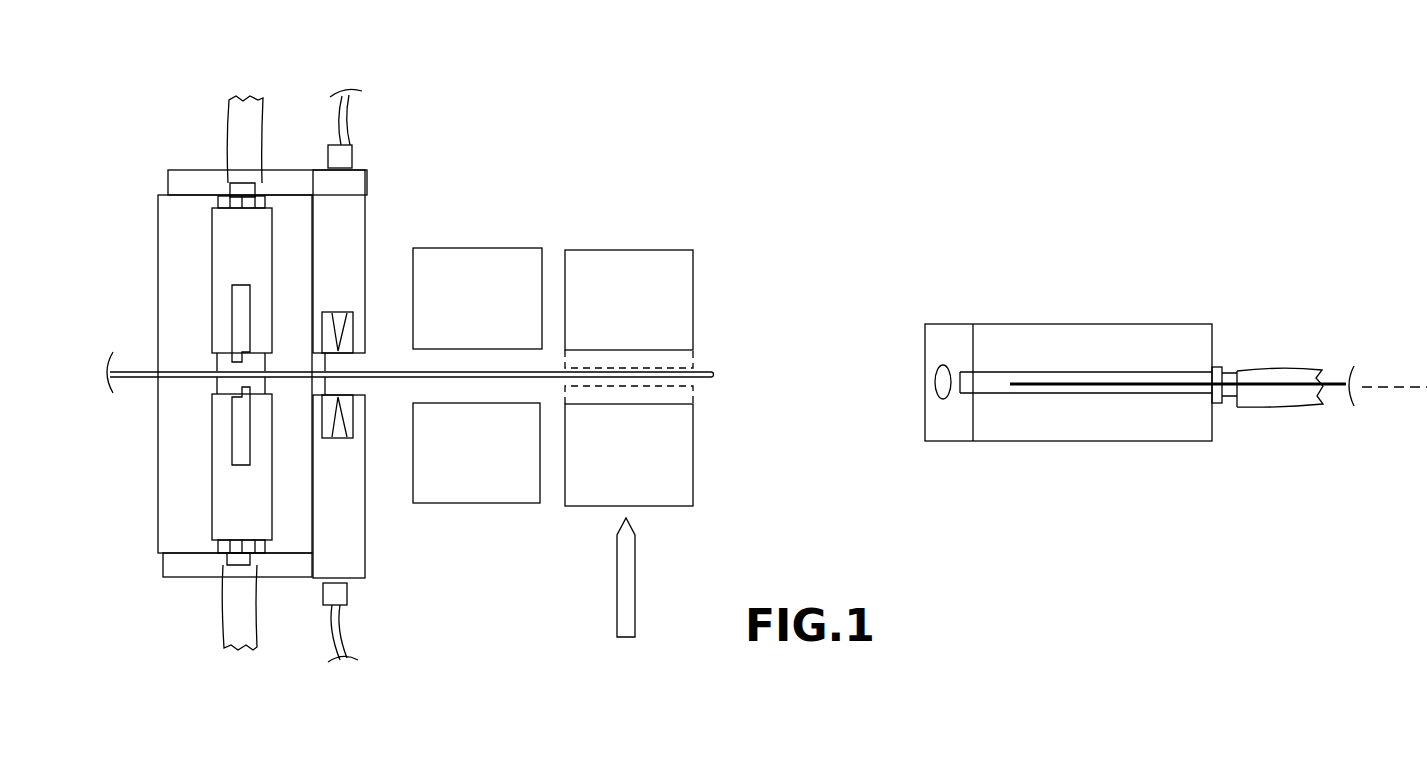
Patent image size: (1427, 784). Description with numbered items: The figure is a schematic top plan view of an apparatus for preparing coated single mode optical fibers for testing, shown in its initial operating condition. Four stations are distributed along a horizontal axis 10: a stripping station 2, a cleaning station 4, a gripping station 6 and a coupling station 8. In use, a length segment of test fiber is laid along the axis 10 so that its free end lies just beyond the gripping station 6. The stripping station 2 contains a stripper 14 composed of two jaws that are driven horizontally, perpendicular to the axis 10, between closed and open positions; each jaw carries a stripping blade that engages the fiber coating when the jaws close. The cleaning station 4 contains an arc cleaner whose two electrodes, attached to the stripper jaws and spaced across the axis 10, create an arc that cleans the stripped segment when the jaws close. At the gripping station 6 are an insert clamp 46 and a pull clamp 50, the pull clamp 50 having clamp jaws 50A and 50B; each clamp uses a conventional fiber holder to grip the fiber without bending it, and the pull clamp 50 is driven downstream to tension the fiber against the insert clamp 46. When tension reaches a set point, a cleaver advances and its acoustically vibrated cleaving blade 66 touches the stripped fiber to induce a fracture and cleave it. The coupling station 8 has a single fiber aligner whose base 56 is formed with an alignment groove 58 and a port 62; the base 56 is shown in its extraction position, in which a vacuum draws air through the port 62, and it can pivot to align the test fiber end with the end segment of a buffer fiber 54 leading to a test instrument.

The stripping station 2 is at (298, 108).
The cleaning station 4 is at (388, 190).
The gripping station 6 is at (558, 200).
The coupling station 8 is at (1076, 300).
The horizontal (Z) axis 10 is at (1390, 385).
The stripper 14 is at (190, 248).
The insert clamp 46 is at (484, 234).
The pull clamp 50 is at (631, 234).
The clamp jaw 50A is at (601, 316).
The clamp jaw 50B is at (600, 465).
The buffer fiber 54 is at (1152, 372).
The base 56 is at (1137, 441).
The alignment groove 58 is at (1020, 395).
The port 62 is at (935, 382).
The cleaving blade 66 is at (635, 573).